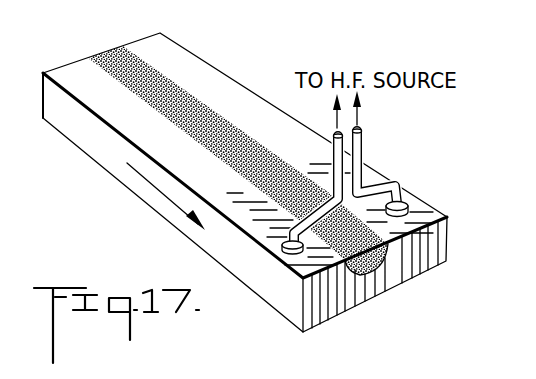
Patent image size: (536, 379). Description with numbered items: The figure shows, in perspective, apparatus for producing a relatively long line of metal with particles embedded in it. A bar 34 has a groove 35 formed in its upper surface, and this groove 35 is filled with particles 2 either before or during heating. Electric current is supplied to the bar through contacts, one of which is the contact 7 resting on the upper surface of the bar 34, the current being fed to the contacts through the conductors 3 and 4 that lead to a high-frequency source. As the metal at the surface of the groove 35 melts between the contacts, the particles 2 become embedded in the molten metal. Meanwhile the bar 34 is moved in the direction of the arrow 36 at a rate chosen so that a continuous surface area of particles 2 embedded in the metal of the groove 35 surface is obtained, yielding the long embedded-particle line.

The particles 2 is at (115, 63).
The bar 34 is at (238, 97).
The arrow 36 is at (203, 248).
The groove 35 is at (383, 272).
The conductor 3 is at (333, 148).
The conductor 4 is at (362, 147).
The contact 7 is at (285, 258).